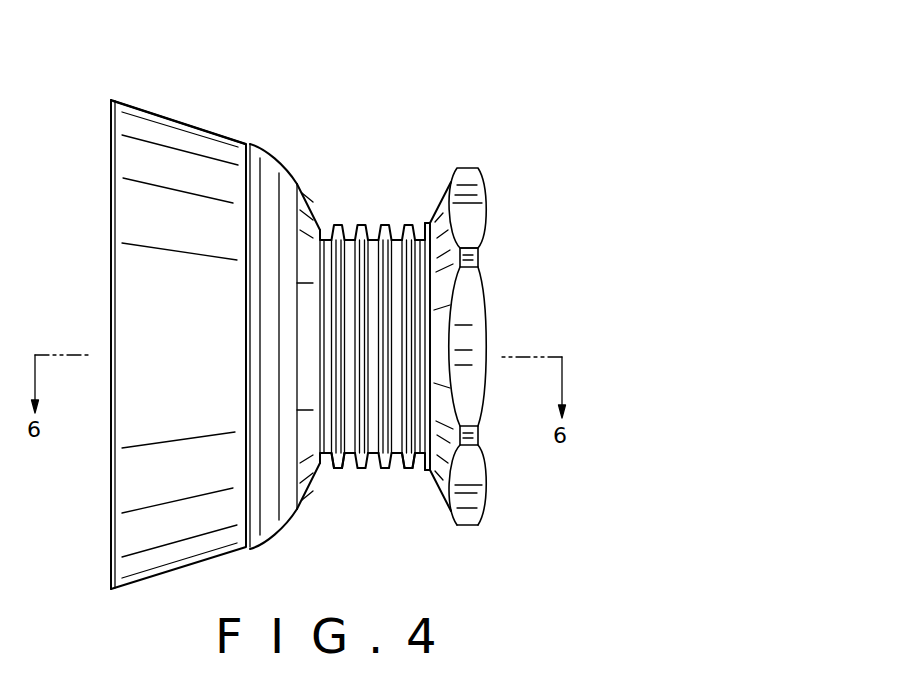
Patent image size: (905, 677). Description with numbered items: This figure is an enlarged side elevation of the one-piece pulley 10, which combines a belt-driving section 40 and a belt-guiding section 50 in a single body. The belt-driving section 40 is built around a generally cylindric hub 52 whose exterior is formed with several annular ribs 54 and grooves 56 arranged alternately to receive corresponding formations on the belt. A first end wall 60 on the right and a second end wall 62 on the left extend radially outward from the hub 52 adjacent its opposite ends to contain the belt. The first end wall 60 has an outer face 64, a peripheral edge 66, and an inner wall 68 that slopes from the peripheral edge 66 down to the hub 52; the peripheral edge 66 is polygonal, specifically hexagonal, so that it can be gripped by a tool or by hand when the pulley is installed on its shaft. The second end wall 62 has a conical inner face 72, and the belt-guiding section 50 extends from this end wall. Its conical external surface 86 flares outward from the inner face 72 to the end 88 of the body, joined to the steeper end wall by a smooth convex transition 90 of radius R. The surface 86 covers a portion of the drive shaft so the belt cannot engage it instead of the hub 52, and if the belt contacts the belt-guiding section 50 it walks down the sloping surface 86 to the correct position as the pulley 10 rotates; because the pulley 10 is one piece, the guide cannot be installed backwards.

The pulley 10 is at (384, 72).
The belt-driving section 40 is at (368, 212).
The belt-guiding section 50 is at (205, 112).
The hub 52 is at (338, 470).
The annular ribs 54 is at (407, 470).
The grooves 56 is at (378, 470).
The first end wall 60 is at (447, 185).
The second end wall 62 is at (303, 192).
The outer face 64 is at (483, 485).
The peripheral edge 66 is at (472, 525).
The inner wall 68 is at (440, 507).
The conical inner face 72 is at (308, 482).
The conical external surface 86 is at (165, 117).
The end 88 is at (112, 118).
The convex transition 90 is at (277, 158).